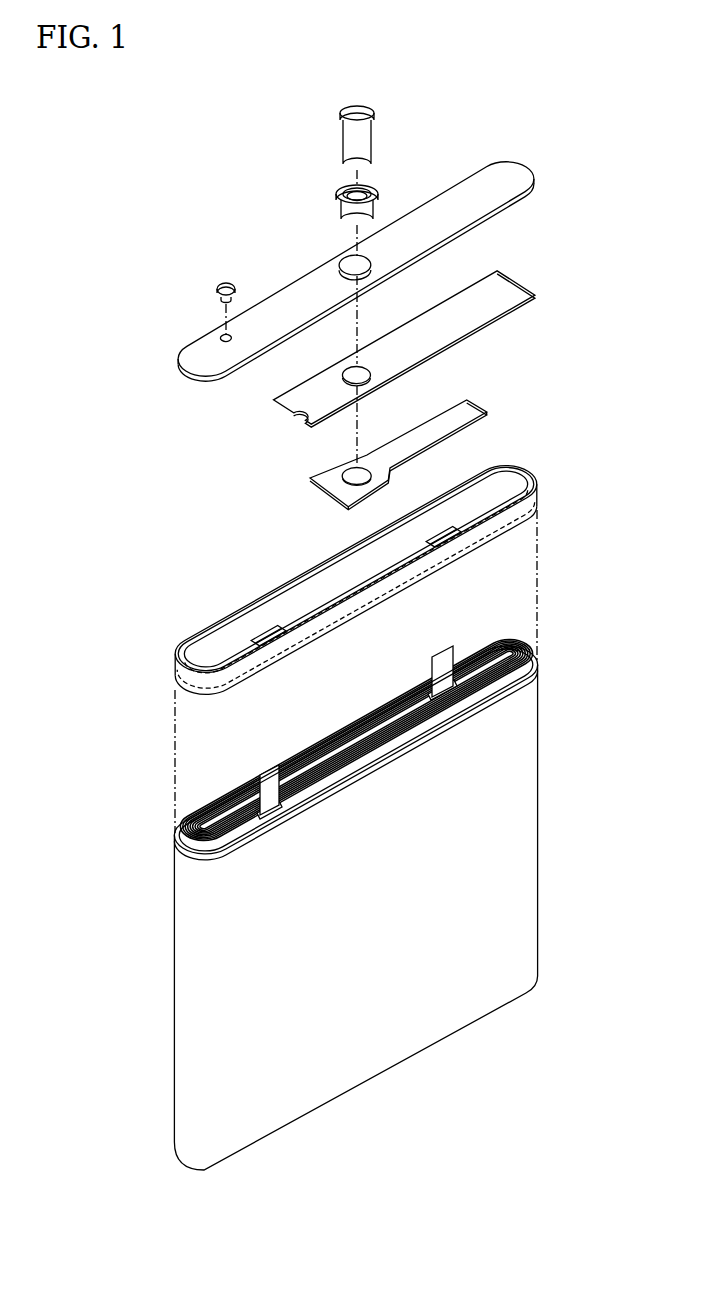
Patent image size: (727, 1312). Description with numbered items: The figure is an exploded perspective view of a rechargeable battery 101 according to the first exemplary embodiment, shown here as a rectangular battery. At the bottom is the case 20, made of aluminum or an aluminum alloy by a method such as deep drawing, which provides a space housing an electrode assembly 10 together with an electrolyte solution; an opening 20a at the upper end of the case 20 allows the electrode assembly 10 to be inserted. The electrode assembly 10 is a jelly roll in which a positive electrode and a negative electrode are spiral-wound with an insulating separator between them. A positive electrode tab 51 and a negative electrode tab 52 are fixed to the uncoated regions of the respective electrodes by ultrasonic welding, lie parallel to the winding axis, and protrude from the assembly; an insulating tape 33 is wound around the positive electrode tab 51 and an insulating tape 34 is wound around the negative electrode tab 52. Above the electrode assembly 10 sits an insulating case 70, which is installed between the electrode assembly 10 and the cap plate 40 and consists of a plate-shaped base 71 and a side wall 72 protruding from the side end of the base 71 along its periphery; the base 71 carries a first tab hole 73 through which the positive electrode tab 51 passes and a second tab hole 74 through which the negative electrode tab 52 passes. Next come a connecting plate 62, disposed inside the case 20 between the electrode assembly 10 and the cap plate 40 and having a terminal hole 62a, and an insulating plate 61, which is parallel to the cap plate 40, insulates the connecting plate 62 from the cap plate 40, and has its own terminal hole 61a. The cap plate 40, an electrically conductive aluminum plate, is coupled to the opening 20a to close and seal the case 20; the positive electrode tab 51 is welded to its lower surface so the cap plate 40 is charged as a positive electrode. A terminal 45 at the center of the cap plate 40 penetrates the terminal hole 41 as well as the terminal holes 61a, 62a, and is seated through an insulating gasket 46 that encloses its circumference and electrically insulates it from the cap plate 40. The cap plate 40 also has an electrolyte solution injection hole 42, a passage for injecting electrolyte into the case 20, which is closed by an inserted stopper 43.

The rechargeable battery 101 is at (377, 63).
The electrode assembly 10 is at (385, 722).
The case 20 is at (386, 905).
The opening 20a is at (518, 697).
The insulating tape 33 is at (240, 823).
The insulating tape 34 is at (405, 687).
The positive electrode tab 51 is at (268, 780).
The negative electrode tab 52 is at (443, 662).
The cap plate 40 is at (361, 264).
The terminal hole 41 is at (378, 258).
The electrolyte solution injection hole 42 is at (221, 338).
The stopper 43 is at (216, 287).
The terminal 45 is at (343, 118).
The insulating gasket 46 is at (337, 199).
The insulating plate 61 is at (432, 349).
The terminal hole 61a is at (366, 372).
The connecting plate 62 is at (408, 464).
The terminal hole 62a is at (344, 490).
The insulating case 70 is at (358, 567).
The base 71 is at (247, 637).
The side wall 72 is at (484, 482).
The first tab hole 73 is at (278, 647).
The second tab hole 74 is at (452, 542).